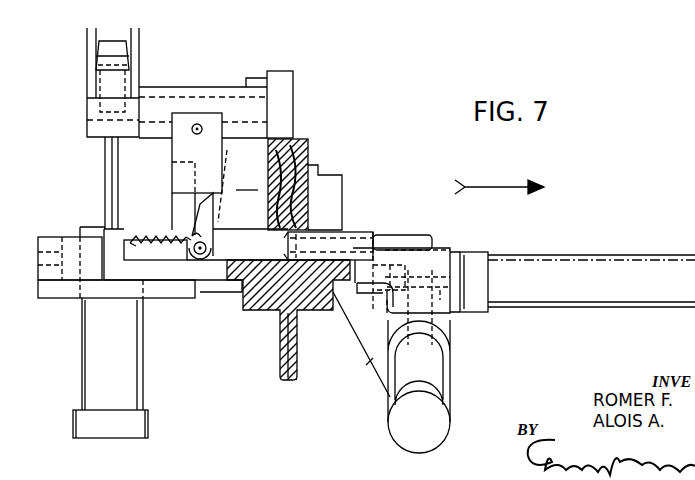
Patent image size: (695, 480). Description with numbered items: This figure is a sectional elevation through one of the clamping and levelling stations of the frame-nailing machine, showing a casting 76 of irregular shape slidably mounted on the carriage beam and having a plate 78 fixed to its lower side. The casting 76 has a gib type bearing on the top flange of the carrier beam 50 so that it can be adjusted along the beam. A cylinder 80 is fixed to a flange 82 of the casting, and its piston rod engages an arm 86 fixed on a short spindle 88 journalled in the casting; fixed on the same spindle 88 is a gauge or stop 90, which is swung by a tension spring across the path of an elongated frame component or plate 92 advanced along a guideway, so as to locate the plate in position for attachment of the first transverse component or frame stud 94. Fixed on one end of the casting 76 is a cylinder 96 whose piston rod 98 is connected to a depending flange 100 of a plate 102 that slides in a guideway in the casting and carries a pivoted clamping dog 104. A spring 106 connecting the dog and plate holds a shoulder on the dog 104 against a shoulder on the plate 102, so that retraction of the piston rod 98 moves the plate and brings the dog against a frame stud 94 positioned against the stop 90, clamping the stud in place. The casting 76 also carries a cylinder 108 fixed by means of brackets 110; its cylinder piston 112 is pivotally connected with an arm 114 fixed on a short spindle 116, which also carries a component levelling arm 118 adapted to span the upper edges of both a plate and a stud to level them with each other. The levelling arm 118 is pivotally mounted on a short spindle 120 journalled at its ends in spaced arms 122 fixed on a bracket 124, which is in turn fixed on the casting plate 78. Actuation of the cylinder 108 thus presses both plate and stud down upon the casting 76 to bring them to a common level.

The carrier beam 50 is at (296, 345).
The casting 76 is at (168, 278).
The plate 78 is at (56, 298).
The cylinder 80 is at (388, 414).
The flange 82 is at (361, 344).
The arm 86 is at (447, 320).
The short spindle 88 is at (432, 242).
The gauge or stop 90 is at (340, 176).
The plate 92 is at (247, 181).
The frame stud 94 is at (307, 143).
The cylinder 96 is at (548, 256).
The piston rod 98 is at (392, 304).
The depending flange 100 is at (375, 268).
The plate 102 is at (355, 238).
The clamping dog 104 is at (217, 213).
The spring 106 is at (162, 232).
The cylinder 108 is at (85, 392).
The brackets 110 is at (44, 236).
The cylinder piston 112 is at (105, 174).
The arm 114 is at (90, 112).
The short spindle 116 is at (177, 87).
The component levelling arm 118 is at (290, 71).
The short spindle 120 is at (202, 131).
The spaced arms 122 is at (172, 158).
The bracket 124 is at (173, 205).